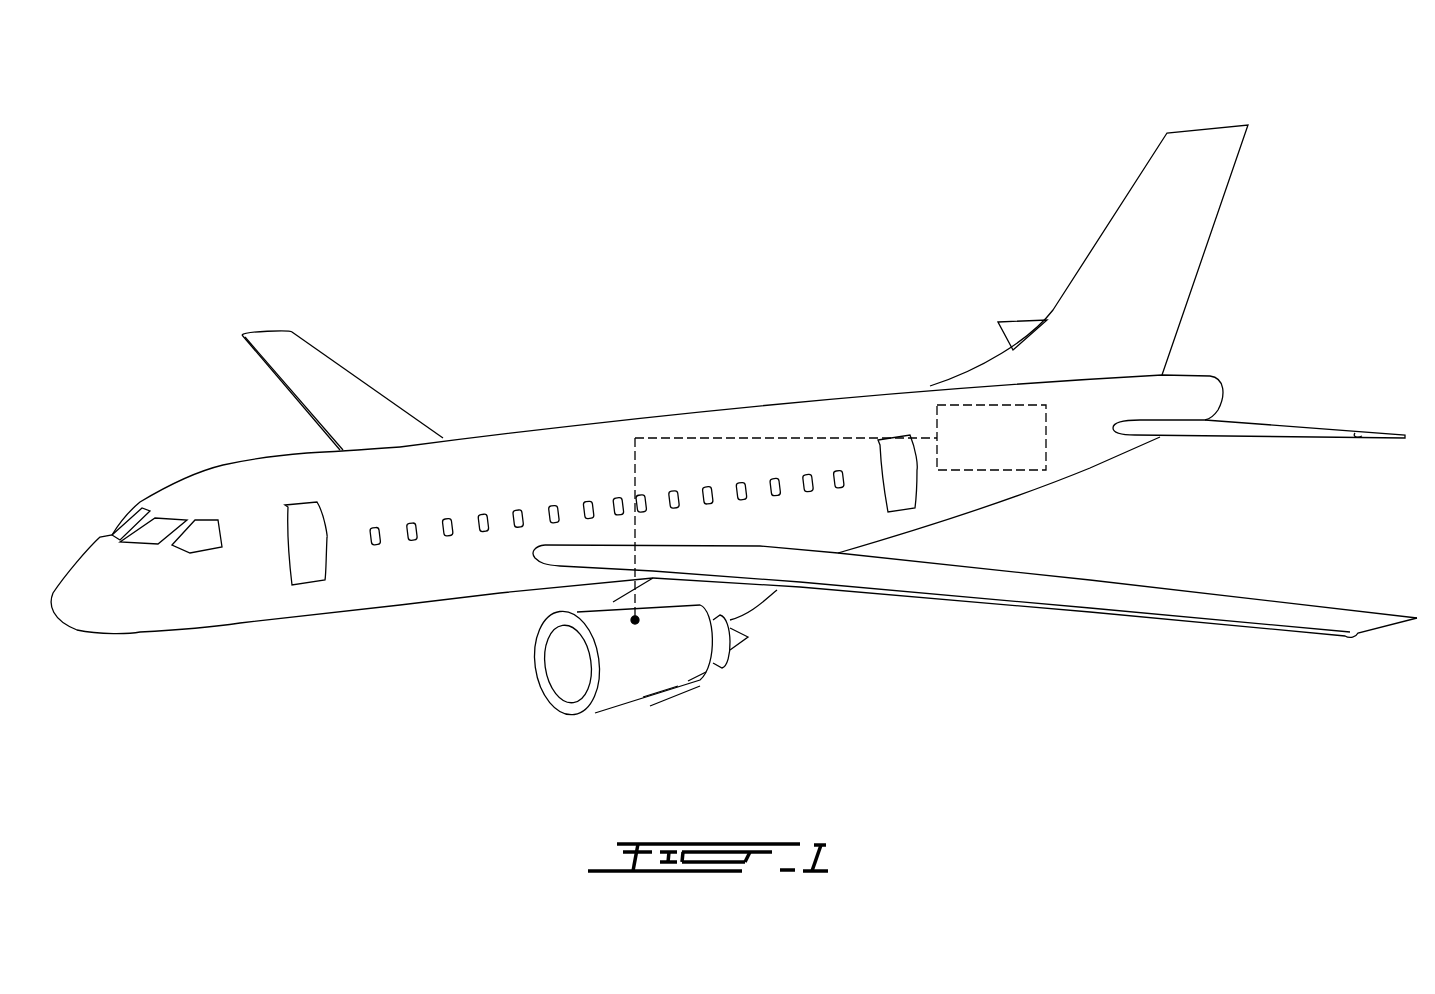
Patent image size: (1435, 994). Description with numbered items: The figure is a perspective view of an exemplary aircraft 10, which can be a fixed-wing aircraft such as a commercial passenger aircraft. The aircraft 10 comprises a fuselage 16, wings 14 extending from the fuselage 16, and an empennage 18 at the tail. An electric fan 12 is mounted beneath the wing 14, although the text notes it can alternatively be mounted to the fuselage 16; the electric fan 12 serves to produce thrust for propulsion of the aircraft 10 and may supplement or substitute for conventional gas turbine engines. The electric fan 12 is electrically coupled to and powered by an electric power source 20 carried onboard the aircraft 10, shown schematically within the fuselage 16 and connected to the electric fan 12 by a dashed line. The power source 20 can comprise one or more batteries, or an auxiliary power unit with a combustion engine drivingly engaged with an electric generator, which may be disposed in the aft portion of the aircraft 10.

The aircraft 10 is at (245, 231).
The electric fan 12 is at (570, 663).
The wing 14 is at (350, 390).
The fuselage 16 is at (590, 444).
The empennage 18 is at (1071, 230).
The electric power source 20 is at (1003, 452).